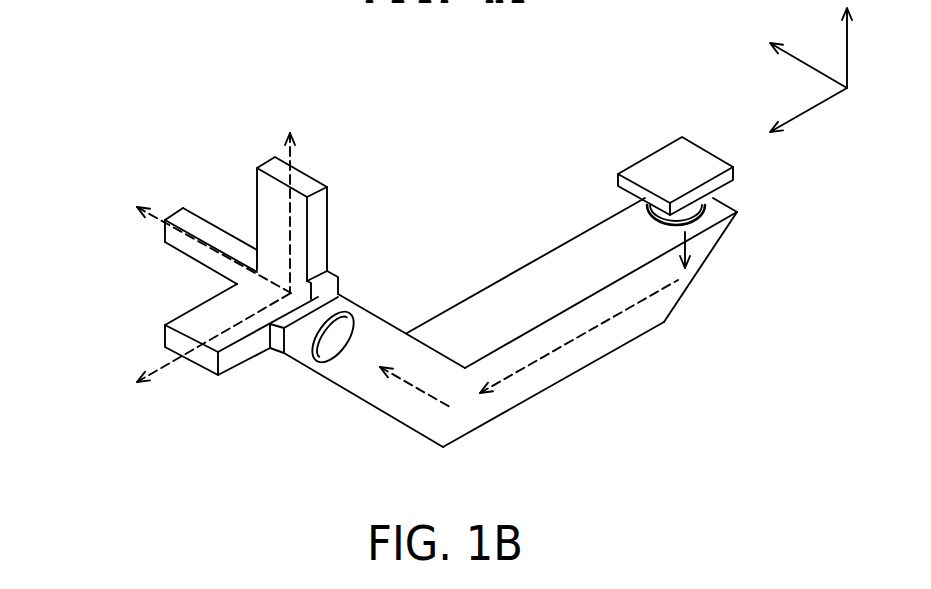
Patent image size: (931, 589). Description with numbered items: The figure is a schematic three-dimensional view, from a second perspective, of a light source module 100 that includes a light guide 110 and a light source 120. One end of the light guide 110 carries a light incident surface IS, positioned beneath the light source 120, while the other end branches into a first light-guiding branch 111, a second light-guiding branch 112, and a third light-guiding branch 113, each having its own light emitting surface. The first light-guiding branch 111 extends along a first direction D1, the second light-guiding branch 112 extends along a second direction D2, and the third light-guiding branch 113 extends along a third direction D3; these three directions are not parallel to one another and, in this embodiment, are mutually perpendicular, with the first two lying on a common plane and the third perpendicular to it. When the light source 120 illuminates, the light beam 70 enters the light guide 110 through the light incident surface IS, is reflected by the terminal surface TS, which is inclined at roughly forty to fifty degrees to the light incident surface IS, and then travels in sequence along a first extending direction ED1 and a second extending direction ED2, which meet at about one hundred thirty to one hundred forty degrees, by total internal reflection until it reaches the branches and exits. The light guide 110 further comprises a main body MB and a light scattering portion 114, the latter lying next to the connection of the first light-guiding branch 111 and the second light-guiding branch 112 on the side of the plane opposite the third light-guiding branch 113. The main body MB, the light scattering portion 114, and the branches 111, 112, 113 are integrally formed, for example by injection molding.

The light source module 100 is at (476, 246).
The light guide 110 is at (398, 290).
The first light-guiding branch 111 is at (172, 338).
The second light-guiding branch 112 is at (320, 240).
The third light-guiding branch 113 is at (192, 246).
The light scattering portion 114 is at (285, 373).
The light source 120 is at (655, 167).
The light beam 70 is at (688, 236).
The light incident surface IS is at (667, 227).
The terminal surface TS is at (703, 277).
The main body MB is at (475, 410).
The first extending direction ED1 is at (588, 332).
The second extending direction ED2 is at (423, 393).
The first direction D1 is at (197, 348).
The second direction D2 is at (291, 194).
The third direction D3 is at (195, 238).